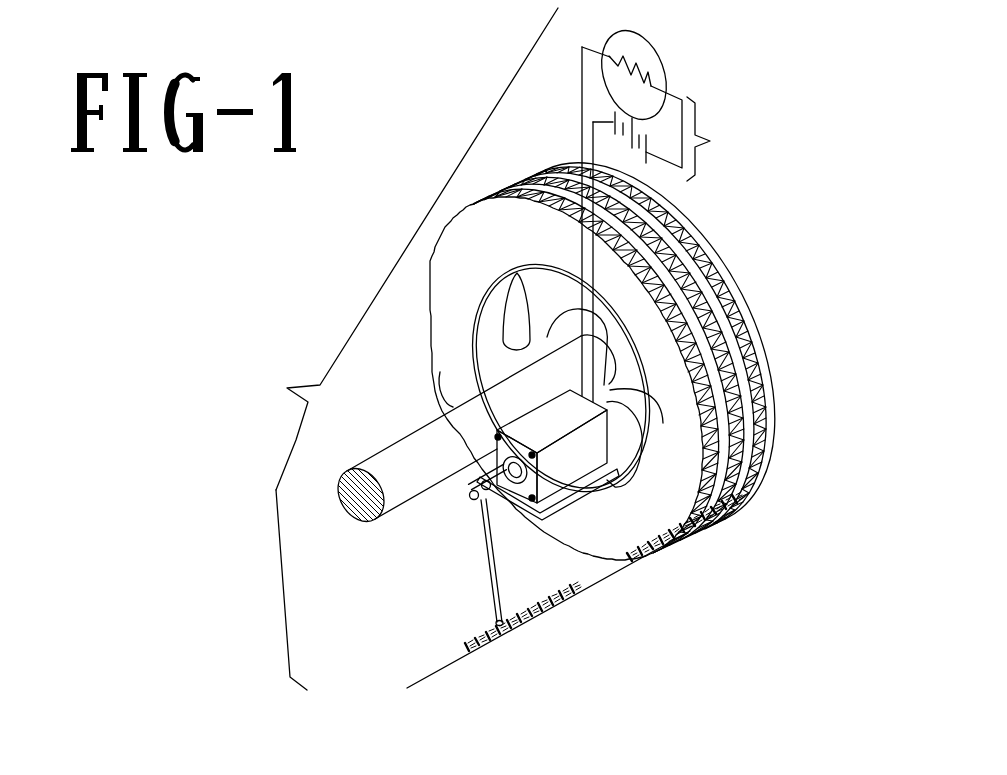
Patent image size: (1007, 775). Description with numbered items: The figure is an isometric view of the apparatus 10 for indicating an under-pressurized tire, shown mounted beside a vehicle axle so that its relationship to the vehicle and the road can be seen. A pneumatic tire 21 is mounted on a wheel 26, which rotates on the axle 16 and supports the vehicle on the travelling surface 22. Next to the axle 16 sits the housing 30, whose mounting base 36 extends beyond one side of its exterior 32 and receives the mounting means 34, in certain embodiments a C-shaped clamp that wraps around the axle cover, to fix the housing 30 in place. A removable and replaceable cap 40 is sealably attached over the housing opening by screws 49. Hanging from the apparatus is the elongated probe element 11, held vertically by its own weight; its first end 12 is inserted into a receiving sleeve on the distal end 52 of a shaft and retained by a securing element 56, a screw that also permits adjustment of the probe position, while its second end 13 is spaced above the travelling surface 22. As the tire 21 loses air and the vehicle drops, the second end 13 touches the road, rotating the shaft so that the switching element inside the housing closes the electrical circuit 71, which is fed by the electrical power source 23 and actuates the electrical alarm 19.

The apparatus 10 is at (405, 249).
The probe element 11 is at (500, 580).
The first end 12 is at (505, 500).
The second end 13 is at (497, 626).
The axle 16 is at (452, 440).
The electrical alarm 19 is at (658, 47).
The pneumatic tire 21 is at (640, 531).
The travelling surface 22 is at (360, 679).
The electrical power source 23 is at (632, 150).
The wheel 26 is at (617, 453).
The housing 30 is at (572, 476).
The exterior 32 is at (647, 422).
The mounting means 34 is at (524, 304).
The mounting base 36 is at (470, 486).
The cap 40 is at (497, 468).
The screws 49 is at (532, 452).
The distal end 52 is at (470, 502).
The securing element 56 is at (484, 512).
The electrical circuit 71 is at (684, 139).